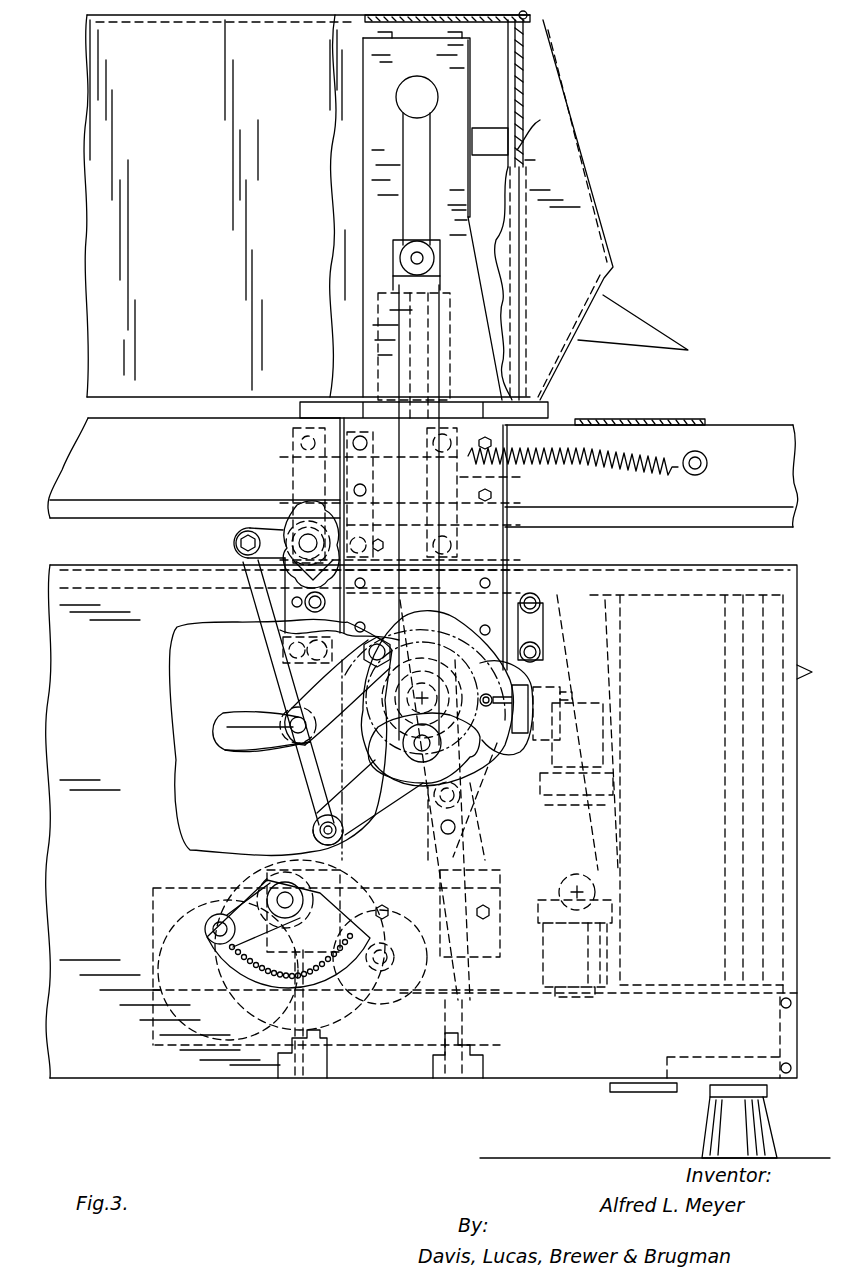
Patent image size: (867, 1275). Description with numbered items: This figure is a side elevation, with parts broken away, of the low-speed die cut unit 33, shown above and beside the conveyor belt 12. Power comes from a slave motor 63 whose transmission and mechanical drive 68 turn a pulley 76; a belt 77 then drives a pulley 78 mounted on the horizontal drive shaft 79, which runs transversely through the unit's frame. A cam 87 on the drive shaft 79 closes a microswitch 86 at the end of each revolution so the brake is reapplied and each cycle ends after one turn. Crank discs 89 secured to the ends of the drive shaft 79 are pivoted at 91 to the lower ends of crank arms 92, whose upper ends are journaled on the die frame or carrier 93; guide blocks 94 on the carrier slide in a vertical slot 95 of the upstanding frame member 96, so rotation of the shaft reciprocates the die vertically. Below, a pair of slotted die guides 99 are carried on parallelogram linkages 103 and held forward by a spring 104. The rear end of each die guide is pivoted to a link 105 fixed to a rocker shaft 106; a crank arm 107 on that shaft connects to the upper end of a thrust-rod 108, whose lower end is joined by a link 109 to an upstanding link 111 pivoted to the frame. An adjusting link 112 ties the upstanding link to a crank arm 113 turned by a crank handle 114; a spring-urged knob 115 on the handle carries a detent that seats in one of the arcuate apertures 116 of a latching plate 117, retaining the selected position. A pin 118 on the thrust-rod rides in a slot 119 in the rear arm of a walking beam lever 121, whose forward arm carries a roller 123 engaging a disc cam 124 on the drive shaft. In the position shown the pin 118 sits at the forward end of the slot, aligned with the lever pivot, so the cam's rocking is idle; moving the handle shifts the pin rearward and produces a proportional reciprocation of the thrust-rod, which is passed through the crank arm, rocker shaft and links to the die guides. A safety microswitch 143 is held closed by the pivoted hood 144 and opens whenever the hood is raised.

The conveyor belt 12 is at (686, 420).
The low-speed die cut unit 33 is at (98, 342).
The slave motor 63 is at (153, 1025).
The mechanical drive 68 is at (357, 1060).
The pulley 76 is at (462, 975).
The belt 77 is at (480, 767).
The pulley 78 is at (460, 632).
The drive shaft 79 is at (417, 648).
The microswitch 86 is at (525, 690).
The cam 87 is at (525, 745).
The crank discs 89 is at (317, 807).
The pivotal connection 91 is at (385, 755).
The crank arms 92 is at (443, 582).
The die frame or carrier 93 is at (395, 240).
The guide blocks 94 is at (395, 256).
The vertical slot 95 is at (406, 150).
The upstanding frame member 96 is at (375, 72).
The die guides 99 is at (376, 324).
The parallelogram linkages 103 is at (490, 487).
The spring 104 is at (640, 470).
The link 105 is at (298, 470).
The rocker shaft 106 is at (300, 540).
The crank arm 107 is at (236, 545).
The thrust-rod 108 is at (230, 618).
The link 109 is at (313, 830).
The upstanding link 111 is at (470, 857).
The adjusting link 112 is at (440, 800).
The crank arm 113 is at (267, 863).
The crank handle 114 is at (247, 913).
The knob 115 is at (205, 930).
The apertures 116 is at (237, 957).
The latching plate 117 is at (260, 983).
The pin 118 is at (280, 710).
The slot 119 is at (230, 730).
The walking beam lever 121 is at (253, 750).
The roller 123 is at (387, 630).
The disc cam 124 is at (293, 688).
The microswitch 143 is at (500, 135).
The pivoted hood 144 is at (598, 190).